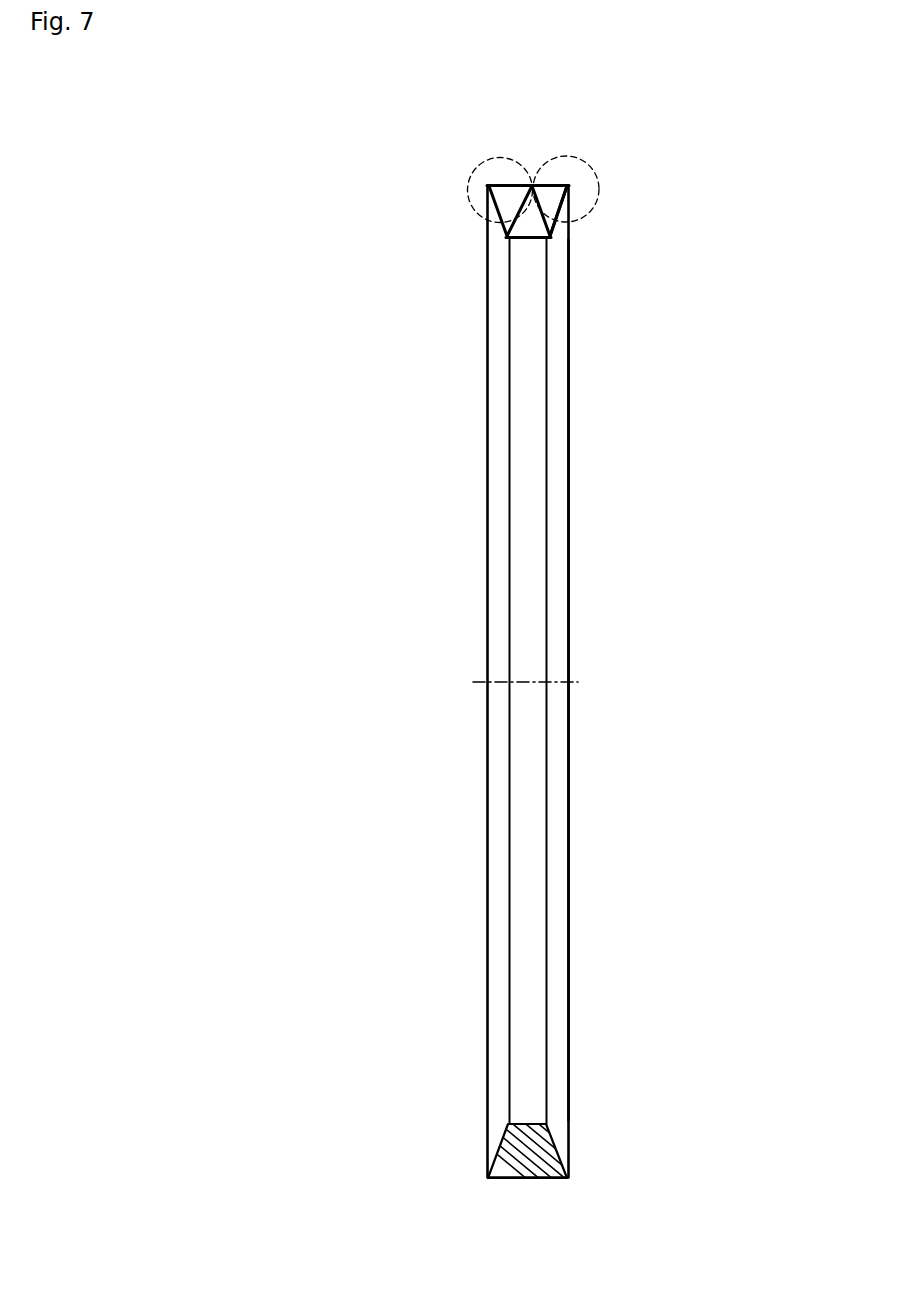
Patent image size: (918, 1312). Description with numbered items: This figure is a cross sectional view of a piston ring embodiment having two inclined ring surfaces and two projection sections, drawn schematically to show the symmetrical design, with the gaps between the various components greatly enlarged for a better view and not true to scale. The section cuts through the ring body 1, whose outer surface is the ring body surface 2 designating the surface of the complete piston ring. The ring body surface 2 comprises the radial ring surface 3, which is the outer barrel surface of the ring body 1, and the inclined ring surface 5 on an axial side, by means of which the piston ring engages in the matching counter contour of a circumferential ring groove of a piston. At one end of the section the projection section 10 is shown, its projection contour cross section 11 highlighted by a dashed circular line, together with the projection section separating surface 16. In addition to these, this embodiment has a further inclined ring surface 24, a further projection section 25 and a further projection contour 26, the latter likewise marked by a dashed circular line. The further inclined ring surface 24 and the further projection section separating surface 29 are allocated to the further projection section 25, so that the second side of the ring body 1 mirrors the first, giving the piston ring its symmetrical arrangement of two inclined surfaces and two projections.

The ring body 1 is at (458, 416).
The ring body surface 2 is at (582, 581).
The radial ring surface 3 is at (522, 1180).
The inclined ring surface 5 is at (498, 515).
The projection section 10 is at (510, 195).
The projection contour cross section 11 is at (463, 151).
The projection section separating surface 16 is at (506, 235).
The further inclined ring surface 24 is at (557, 515).
The further projection section 25 is at (560, 198).
The further projection contour 26 is at (617, 151).
The further projection section separating surface 29 is at (548, 232).